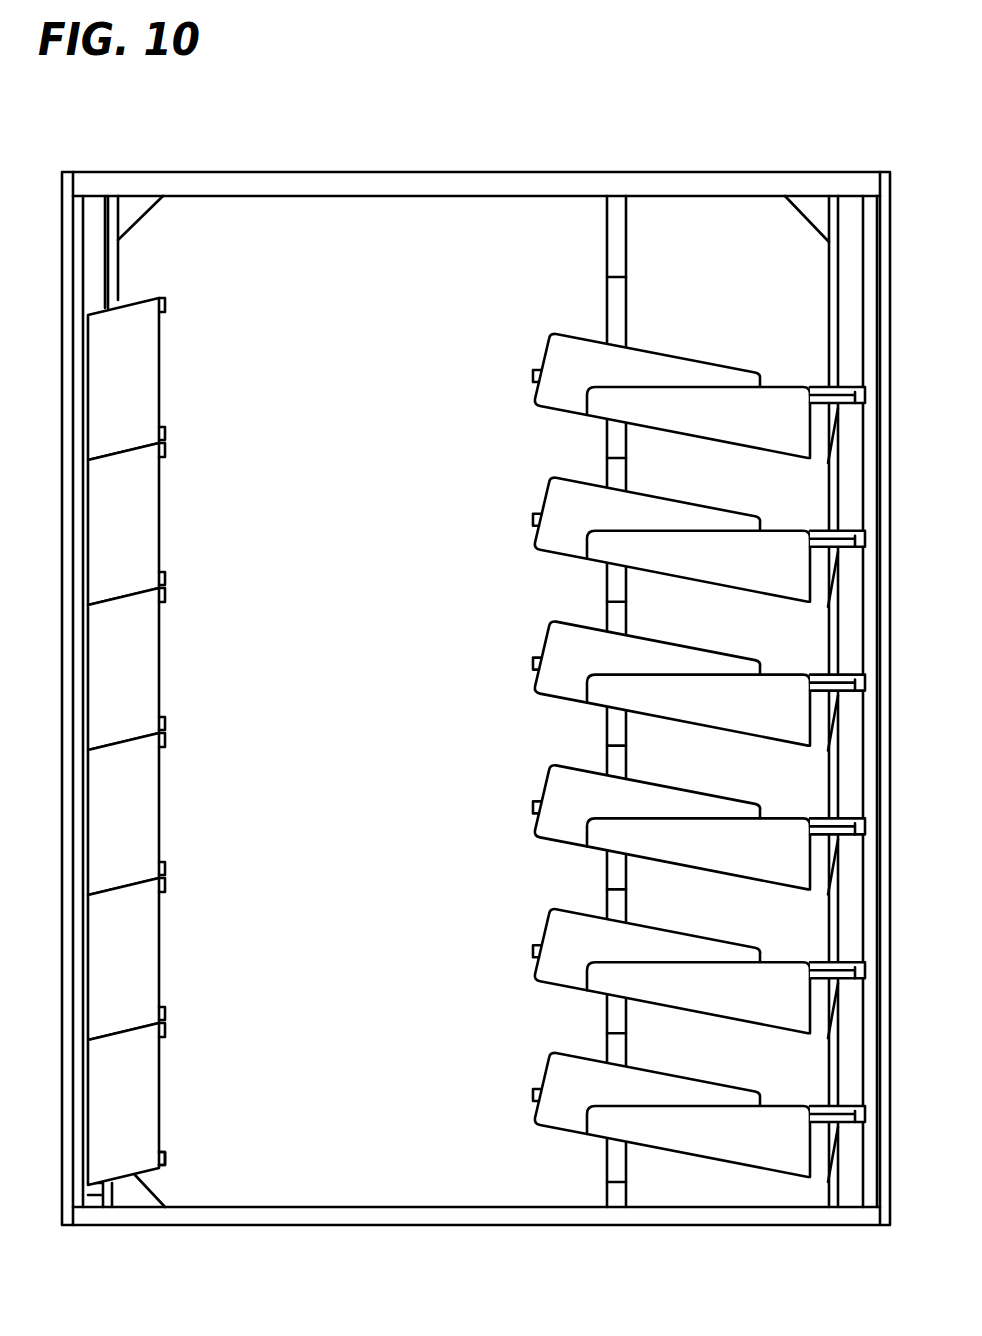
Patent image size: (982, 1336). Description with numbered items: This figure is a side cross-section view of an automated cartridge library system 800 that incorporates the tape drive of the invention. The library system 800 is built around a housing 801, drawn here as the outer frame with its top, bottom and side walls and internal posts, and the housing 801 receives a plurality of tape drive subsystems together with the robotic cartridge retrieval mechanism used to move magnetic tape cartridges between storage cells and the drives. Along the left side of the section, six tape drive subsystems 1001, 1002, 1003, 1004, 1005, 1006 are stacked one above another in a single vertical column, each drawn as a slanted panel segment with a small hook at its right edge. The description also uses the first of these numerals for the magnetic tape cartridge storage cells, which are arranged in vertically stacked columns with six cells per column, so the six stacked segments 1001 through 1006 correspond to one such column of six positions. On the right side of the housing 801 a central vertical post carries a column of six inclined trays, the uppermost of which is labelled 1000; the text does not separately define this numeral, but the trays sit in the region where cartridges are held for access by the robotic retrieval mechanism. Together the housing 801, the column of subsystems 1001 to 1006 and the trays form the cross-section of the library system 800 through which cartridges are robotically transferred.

The automated cartridge library system 800 is at (348, 159).
The housing 801 is at (793, 172).
The sheet tray 1000 is at (549, 344).
The tape drive subsystem 1001 is at (159, 356).
The tape drive subsystem 1002 is at (159, 507).
The tape drive subsystem 1003 is at (159, 651).
The tape drive subsystem 1004 is at (159, 794).
The tape drive subsystem 1005 is at (159, 929).
The tape drive subsystem 1006 is at (159, 1084).